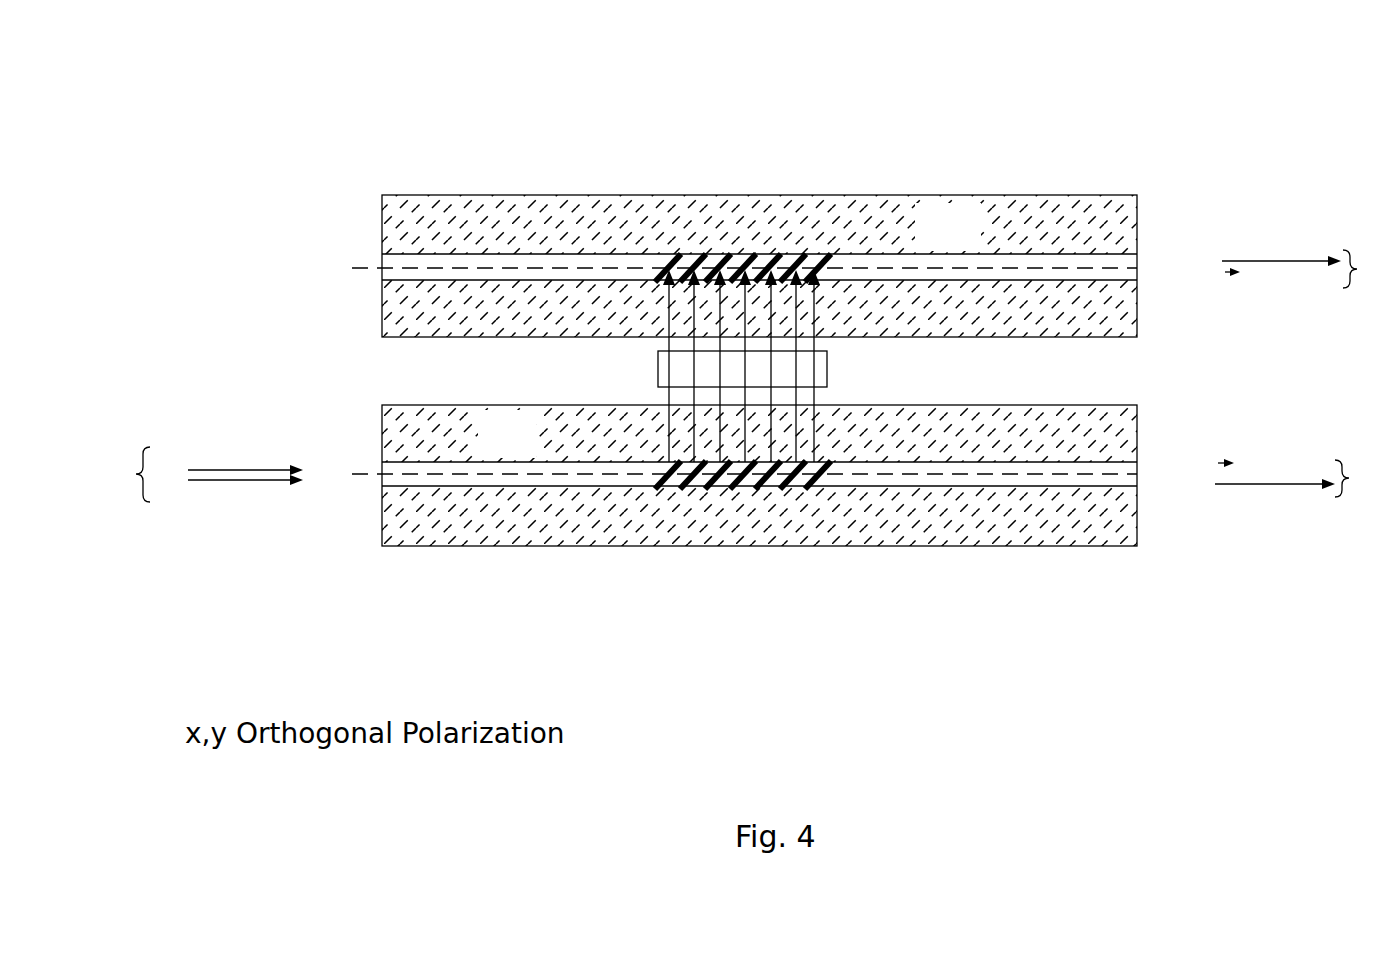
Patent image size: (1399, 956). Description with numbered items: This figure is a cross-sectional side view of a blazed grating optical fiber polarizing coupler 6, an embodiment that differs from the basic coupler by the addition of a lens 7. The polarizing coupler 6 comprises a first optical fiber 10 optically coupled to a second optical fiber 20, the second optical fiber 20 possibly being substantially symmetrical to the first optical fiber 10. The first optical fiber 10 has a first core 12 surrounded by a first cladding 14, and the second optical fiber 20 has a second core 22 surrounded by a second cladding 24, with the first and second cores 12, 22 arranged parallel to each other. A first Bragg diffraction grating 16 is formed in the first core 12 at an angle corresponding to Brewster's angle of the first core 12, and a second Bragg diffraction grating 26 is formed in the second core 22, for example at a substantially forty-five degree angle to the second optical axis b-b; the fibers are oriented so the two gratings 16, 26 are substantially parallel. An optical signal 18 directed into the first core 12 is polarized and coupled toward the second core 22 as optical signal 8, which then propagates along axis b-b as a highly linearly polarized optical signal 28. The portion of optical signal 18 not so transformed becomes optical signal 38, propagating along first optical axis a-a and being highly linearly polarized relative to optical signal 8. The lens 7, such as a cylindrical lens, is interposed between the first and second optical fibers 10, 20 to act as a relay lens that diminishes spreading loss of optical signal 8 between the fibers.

The polarizing coupler 6 is at (266, 74).
The lens 7 is at (657, 372).
The optical signal 8 is at (871, 270).
The first optical fiber 10 is at (748, 529).
The first core 12 is at (427, 486).
The first cladding 14 is at (520, 449).
The first Bragg diffraction grating 16 is at (841, 497).
The optical signal 18 is at (125, 472).
The second optical fiber 20 is at (748, 225).
The second core 22 is at (517, 268).
The second cladding 24 is at (964, 241).
The second Bragg diffraction grating 26 is at (655, 236).
The optical signal 28 is at (1365, 273).
The optical signal 38 is at (1355, 480).